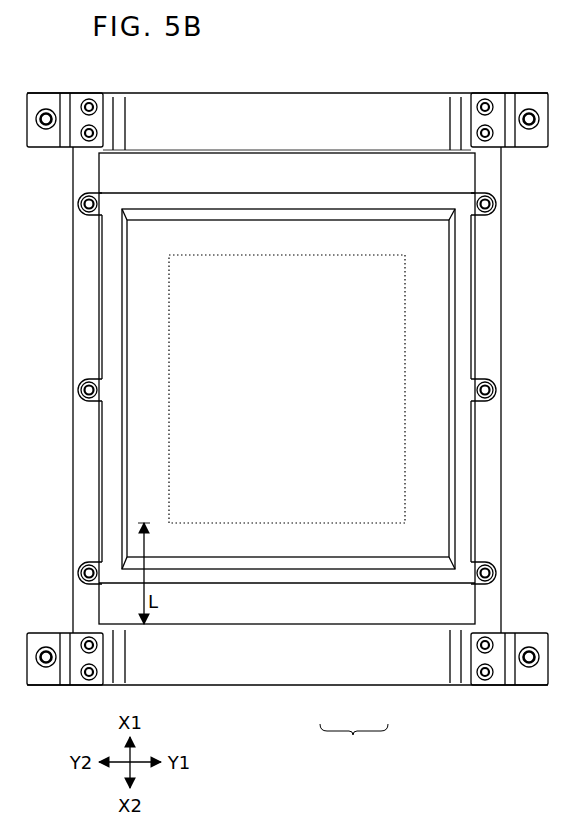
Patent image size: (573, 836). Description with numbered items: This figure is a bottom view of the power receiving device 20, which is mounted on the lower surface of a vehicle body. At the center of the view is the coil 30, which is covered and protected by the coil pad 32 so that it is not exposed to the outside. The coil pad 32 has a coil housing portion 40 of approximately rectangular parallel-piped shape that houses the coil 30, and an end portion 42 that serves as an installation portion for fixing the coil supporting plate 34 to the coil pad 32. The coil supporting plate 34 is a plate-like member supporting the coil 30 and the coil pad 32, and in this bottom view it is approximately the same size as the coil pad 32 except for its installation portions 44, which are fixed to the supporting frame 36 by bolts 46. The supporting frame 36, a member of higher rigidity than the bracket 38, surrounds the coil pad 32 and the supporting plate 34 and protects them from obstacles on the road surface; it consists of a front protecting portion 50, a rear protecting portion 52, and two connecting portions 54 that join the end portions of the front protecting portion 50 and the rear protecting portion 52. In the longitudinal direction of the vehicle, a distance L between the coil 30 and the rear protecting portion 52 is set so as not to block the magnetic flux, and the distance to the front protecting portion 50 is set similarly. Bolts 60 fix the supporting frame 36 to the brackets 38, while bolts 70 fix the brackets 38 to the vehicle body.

The power receiving device 20 is at (461, 745).
The coil 30 is at (306, 520).
The coil pad 32 is at (354, 741).
The coil supporting plate 34 is at (97, 403).
The supporting frame 36 is at (509, 456).
The bracket 38 is at (46, 142).
The coil housing portion 40 is at (366, 553).
The end portion 42 is at (343, 581).
The installation portion 44 is at (88, 219).
The bolt 46 is at (79, 206).
The front protecting portion 50 is at (297, 107).
The rear protecting portion 52 is at (222, 673).
The connecting portion 54 is at (79, 300).
The bolt 60 is at (97, 129).
The bolt 70 is at (44, 111).